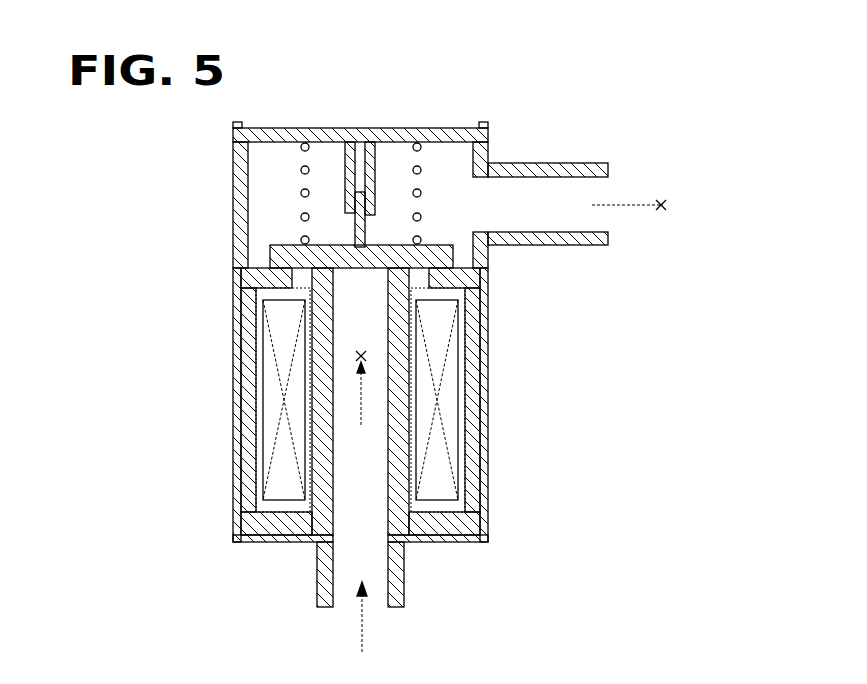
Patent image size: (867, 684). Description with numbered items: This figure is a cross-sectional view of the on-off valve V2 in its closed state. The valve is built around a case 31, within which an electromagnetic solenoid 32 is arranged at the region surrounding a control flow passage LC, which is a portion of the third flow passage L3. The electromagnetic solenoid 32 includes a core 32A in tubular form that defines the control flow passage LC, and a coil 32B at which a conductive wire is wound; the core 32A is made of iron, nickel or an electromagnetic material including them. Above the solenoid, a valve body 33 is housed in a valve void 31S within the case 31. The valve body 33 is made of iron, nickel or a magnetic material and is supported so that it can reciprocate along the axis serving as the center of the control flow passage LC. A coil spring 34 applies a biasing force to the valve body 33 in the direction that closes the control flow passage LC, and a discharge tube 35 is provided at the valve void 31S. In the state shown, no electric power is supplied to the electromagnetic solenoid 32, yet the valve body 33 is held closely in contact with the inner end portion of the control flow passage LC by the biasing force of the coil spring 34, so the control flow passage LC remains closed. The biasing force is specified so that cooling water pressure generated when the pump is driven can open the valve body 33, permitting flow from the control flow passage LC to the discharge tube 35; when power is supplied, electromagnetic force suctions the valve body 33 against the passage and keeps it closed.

The case 31 is at (233, 250).
The valve void 31S is at (272, 180).
The valve body 33 is at (288, 245).
The coil spring 34 is at (422, 216).
The discharge tube 35 is at (548, 246).
The electromagnetic solenoid 32 is at (484, 393).
The core 32A is at (420, 334).
The coil 32B is at (453, 455).
The control flow passage LC is at (357, 397).
The on-off valve V2 is at (192, 318).
The third flow passage L3 is at (632, 201).